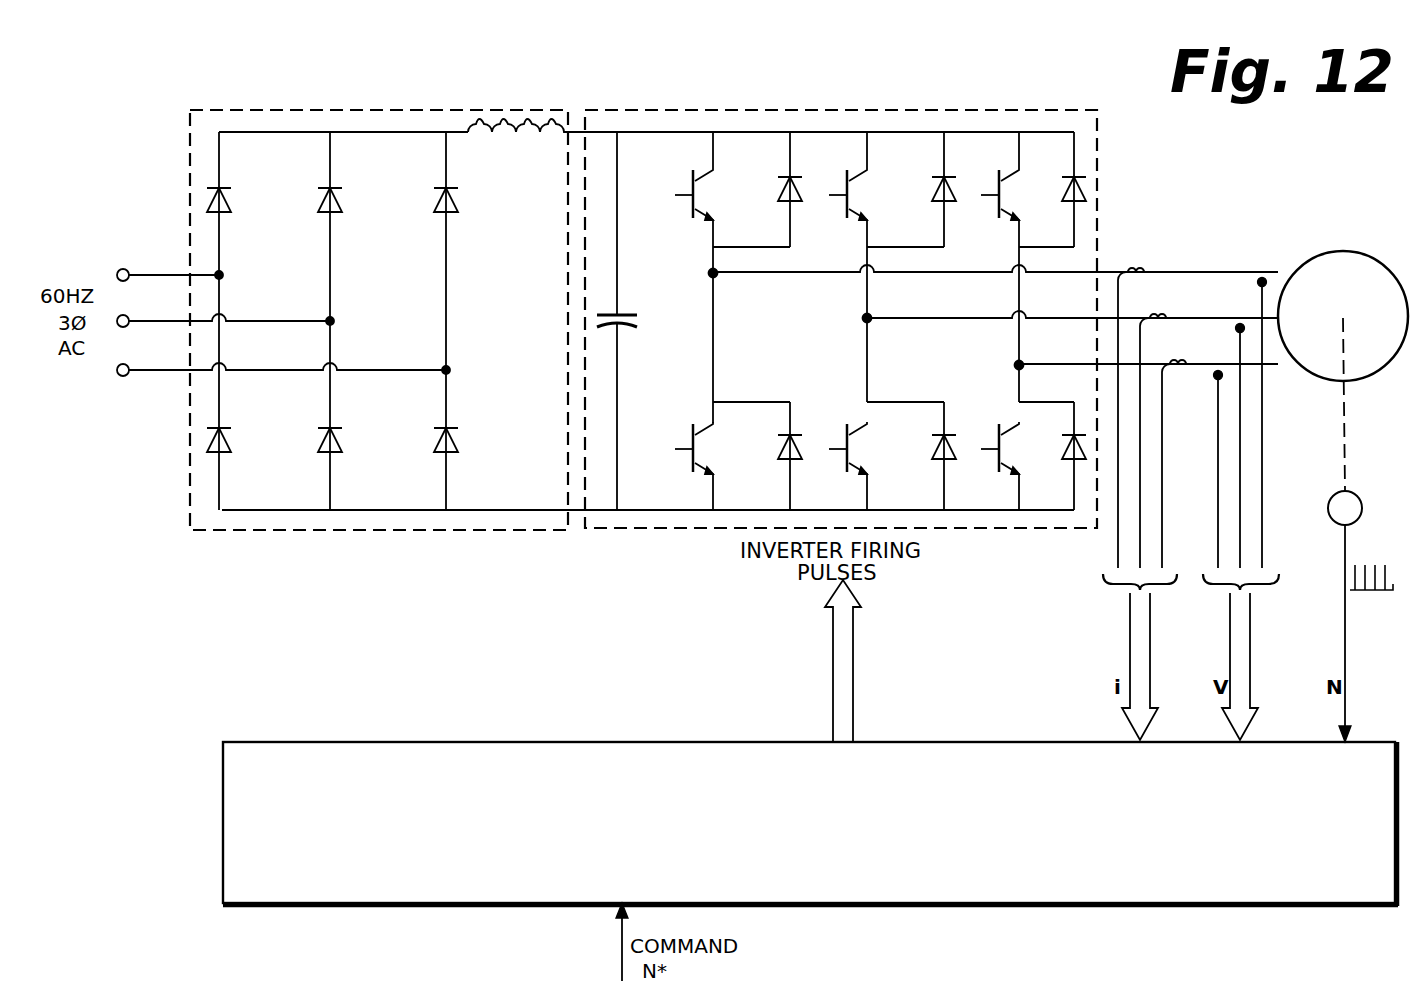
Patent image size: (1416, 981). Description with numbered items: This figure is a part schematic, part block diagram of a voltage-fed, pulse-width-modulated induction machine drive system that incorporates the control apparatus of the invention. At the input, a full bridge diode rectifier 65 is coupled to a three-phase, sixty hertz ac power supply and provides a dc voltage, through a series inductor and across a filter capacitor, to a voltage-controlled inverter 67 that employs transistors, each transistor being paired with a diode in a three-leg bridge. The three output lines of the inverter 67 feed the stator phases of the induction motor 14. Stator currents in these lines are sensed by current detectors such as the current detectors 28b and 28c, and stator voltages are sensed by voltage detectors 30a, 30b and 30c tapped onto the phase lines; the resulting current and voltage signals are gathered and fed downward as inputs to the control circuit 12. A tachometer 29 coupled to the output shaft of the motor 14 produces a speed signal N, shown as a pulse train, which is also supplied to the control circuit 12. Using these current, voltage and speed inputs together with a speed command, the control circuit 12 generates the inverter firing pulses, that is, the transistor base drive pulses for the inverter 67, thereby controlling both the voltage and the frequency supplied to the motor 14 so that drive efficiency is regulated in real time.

The full bridge diode rectifier 65 is at (499, 108).
The voltage-controlled inverter 67 is at (993, 109).
The induction motor 14 is at (1367, 262).
The current detector 28b is at (1166, 302).
The current detector 28c is at (1137, 268).
The voltage detector 30a is at (1258, 283).
The voltage detector 30b is at (1237, 329).
The voltage detector 30c is at (1216, 378).
The tachometer 29 is at (1337, 519).
The control circuit 12 is at (247, 746).